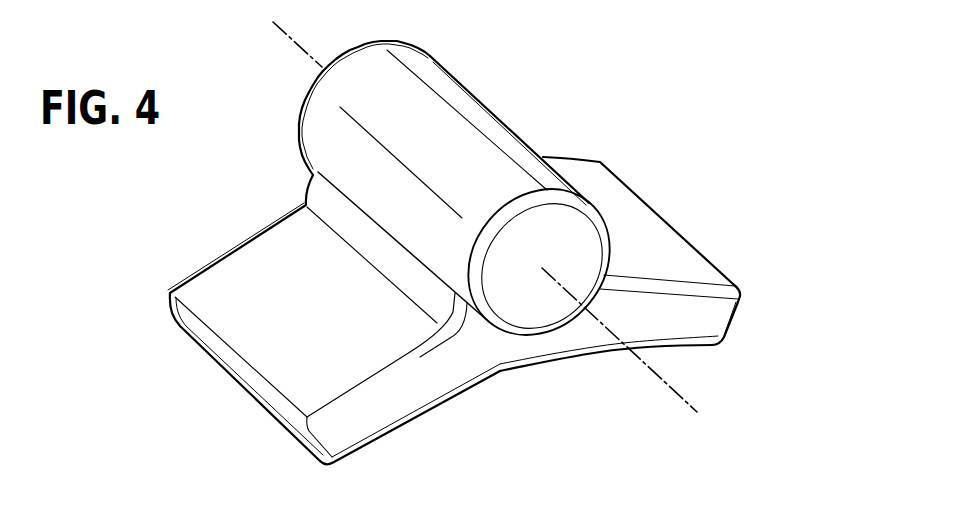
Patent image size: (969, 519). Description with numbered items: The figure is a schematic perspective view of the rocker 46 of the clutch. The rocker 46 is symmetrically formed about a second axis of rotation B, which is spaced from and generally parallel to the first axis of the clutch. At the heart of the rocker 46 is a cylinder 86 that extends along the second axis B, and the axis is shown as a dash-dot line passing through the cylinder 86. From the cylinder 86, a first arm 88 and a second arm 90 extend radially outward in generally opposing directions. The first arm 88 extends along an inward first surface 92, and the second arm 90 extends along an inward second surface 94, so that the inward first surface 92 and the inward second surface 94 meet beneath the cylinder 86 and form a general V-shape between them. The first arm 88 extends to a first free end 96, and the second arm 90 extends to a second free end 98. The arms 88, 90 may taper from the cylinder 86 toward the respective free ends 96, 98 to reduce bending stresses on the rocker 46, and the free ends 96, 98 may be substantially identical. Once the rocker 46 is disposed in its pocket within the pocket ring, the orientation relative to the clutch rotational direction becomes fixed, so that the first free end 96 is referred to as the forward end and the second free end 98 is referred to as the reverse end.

The rocker 46 is at (264, 93).
The cylinder 86 is at (435, 82).
The first arm 88 is at (652, 225).
The second arm 90 is at (251, 266).
The inward first surface 92 is at (584, 367).
The inward second surface 94 is at (416, 434).
The first free end 96 is at (739, 316).
The second free end 98 is at (251, 386).
The second axis of rotation B is at (688, 398).